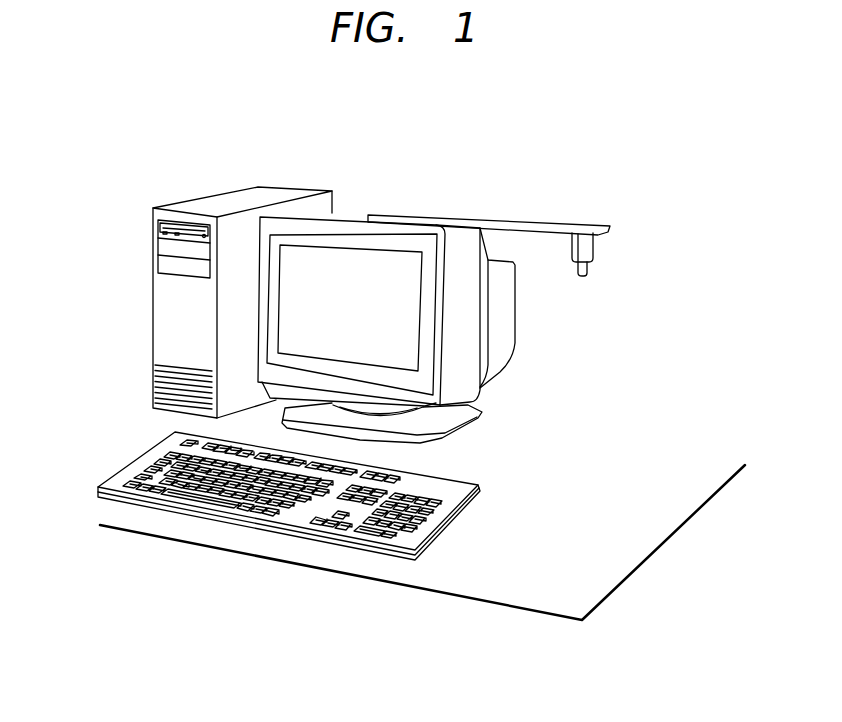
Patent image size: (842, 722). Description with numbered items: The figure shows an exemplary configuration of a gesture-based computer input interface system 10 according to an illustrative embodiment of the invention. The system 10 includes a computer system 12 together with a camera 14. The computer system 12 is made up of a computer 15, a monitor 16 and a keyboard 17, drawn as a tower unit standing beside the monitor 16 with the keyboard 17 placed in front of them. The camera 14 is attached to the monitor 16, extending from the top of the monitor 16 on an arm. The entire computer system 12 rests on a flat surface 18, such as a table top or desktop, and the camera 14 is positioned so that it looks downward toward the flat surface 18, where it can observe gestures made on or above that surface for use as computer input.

The gesture-based computer input interface system 10 is at (143, 151).
The computer system 12 is at (70, 175).
The camera 14 is at (590, 250).
The computer 15 is at (278, 190).
The monitor 16 is at (355, 212).
The keyboard 17 is at (137, 462).
The flat surface 18 is at (612, 568).